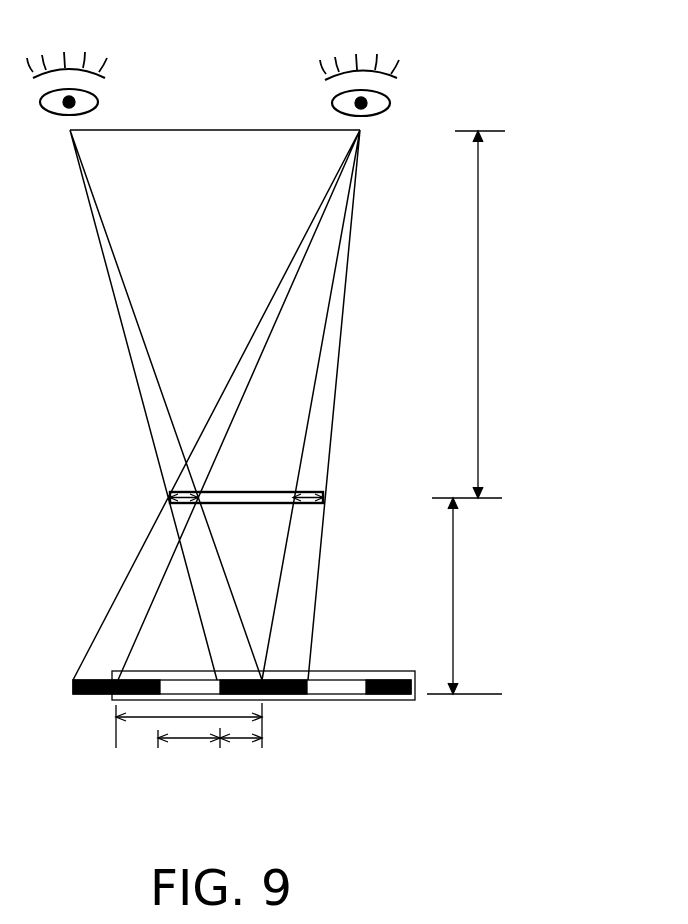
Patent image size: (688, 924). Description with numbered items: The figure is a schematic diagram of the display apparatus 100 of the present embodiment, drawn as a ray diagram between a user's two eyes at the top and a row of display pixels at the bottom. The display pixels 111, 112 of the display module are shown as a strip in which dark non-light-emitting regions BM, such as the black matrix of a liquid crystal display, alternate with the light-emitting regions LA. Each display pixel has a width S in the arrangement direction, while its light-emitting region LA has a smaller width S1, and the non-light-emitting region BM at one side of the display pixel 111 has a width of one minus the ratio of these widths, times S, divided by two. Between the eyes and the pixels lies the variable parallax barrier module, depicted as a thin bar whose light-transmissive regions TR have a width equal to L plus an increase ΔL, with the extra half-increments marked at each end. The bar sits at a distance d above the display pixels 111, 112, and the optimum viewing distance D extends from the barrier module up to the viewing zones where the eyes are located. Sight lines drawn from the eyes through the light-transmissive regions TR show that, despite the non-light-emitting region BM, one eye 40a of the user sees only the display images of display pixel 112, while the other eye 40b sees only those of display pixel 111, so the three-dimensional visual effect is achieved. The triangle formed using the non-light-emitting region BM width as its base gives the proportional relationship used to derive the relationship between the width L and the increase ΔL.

The one eye of the user 40a is at (45, 67).
The other eye of the user 40b is at (397, 77).
The display apparatus 100 is at (347, 641).
The display pixel 111 is at (113, 702).
The display pixel 112 is at (391, 694).
The light-transmissive region TR is at (257, 503).
The width of the light-transmissive regions L is at (270, 492).
The light-emitting region LA is at (336, 686).
The non-light-emitting region BM is at (290, 694).
The optimum viewing distance D is at (477, 314).
The distance between the display pixels and the variable parallax barrier module d is at (464, 596).
The width of each display pixel S is at (148, 718).
The width of the light-emitting region S1 is at (210, 754).